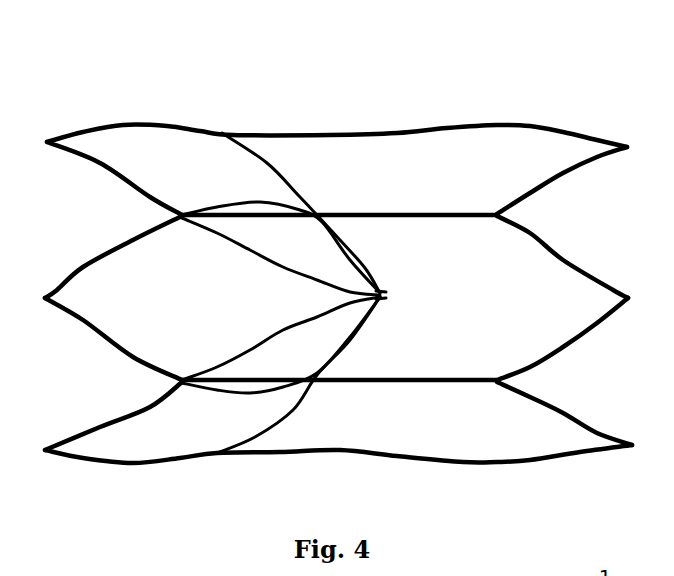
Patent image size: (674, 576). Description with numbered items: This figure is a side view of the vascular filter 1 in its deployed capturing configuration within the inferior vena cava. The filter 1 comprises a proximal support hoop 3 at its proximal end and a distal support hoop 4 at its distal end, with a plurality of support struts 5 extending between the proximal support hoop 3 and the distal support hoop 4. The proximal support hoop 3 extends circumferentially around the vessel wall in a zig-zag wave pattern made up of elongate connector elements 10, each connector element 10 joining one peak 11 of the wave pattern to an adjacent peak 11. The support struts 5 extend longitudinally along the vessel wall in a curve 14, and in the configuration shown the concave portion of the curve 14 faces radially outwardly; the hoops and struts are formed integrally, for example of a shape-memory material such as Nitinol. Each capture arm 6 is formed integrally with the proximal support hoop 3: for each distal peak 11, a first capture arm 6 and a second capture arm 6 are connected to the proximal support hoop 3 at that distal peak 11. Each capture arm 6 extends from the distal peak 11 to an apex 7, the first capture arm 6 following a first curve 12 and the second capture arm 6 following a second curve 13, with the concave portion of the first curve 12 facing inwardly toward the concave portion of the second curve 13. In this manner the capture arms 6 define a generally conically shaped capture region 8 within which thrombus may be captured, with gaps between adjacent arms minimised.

The filter 1 is at (510, 90).
The proximal support hoop 3 is at (50, 460).
The distal support hoop 4 is at (603, 137).
The support strut 5 is at (265, 133).
The capture arm 6 is at (293, 410).
The apex 7 is at (387, 290).
The capture region 8 is at (325, 278).
The connector element 10 is at (108, 340).
The peak 11 is at (47, 137).
The first curve 12 is at (245, 247).
The second curve 13 is at (213, 203).
The curve 14 is at (263, 460).